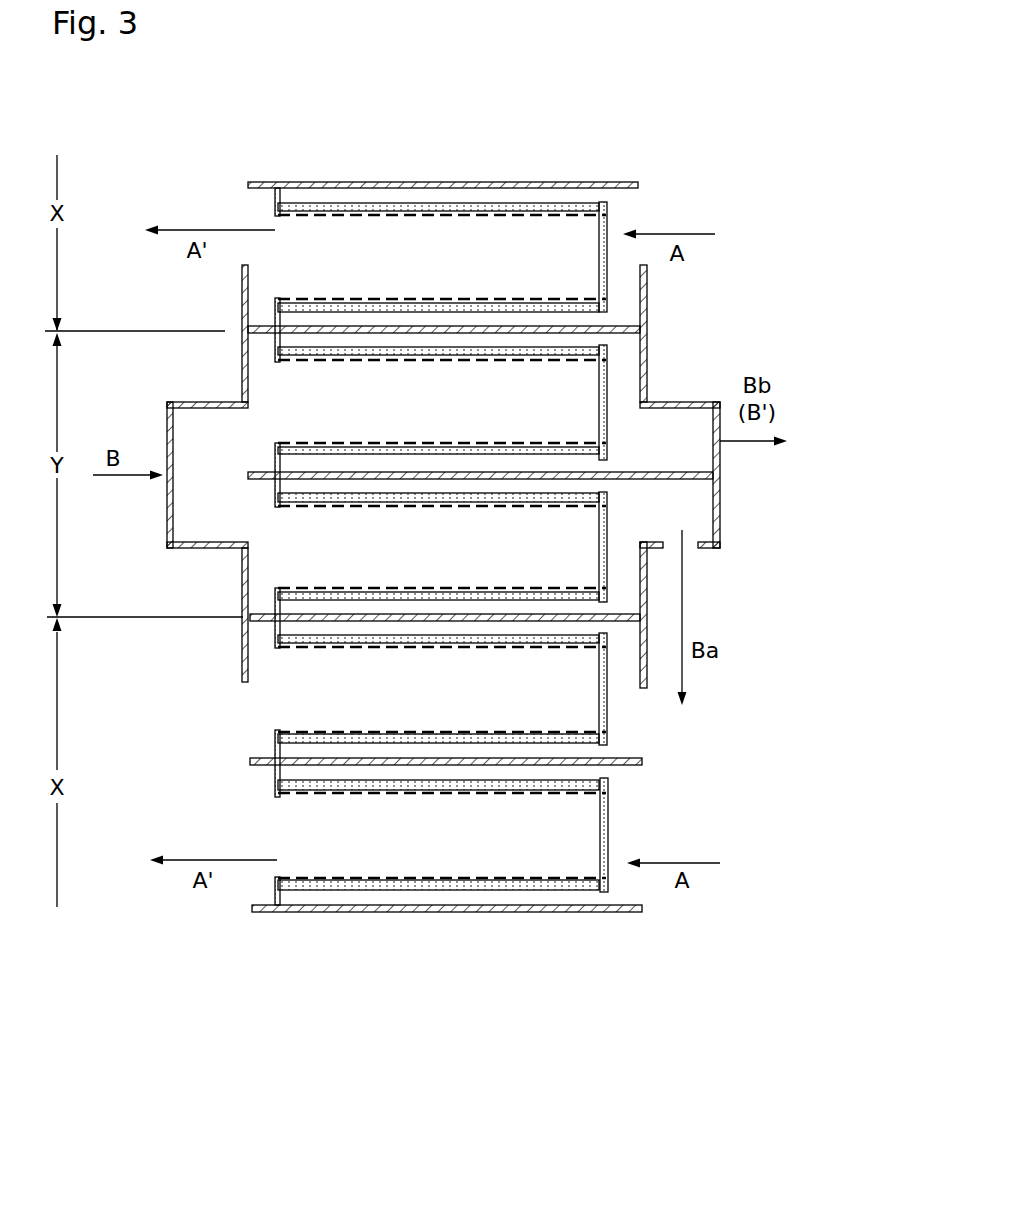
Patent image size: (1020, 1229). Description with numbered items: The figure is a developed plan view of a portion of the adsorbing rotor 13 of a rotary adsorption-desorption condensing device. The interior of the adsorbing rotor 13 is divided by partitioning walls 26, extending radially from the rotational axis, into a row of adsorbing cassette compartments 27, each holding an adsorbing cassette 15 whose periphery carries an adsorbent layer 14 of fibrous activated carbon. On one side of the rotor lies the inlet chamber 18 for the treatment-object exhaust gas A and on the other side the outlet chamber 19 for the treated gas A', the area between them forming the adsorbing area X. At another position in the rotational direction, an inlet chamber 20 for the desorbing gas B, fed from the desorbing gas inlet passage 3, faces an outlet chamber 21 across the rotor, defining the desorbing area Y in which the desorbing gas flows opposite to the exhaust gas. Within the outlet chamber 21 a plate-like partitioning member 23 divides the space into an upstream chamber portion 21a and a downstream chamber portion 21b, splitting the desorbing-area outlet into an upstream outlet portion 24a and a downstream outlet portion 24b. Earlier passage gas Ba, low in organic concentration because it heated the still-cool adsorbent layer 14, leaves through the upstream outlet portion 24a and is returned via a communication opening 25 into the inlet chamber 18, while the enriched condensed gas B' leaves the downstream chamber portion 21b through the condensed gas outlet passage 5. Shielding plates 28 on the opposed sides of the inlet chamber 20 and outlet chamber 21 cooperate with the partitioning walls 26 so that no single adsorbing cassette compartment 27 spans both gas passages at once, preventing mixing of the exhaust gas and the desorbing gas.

The desorbing gas inlet passage 3 is at (110, 478).
The condensed gas outlet passage 5 is at (735, 440).
The adsorbing rotor 13 is at (538, 950).
The adsorbent layer 14 is at (500, 213).
The adsorbing cassette 15 is at (620, 223).
The inlet chamber 18 is at (698, 780).
The outlet chamber 19 is at (107, 778).
The inlet chamber for desorbing gas 20 is at (205, 402).
The outlet chamber for desorbing gas 21 is at (717, 548).
The upstream chamber portion 21a is at (680, 510).
The downstream chamber portion 21b is at (680, 437).
The partitioning member 23 is at (688, 479).
The upstream outlet portion 24a is at (628, 518).
The downstream outlet portion 24b is at (632, 435).
The communication opening 25 is at (694, 556).
The partitioning wall 26 is at (485, 182).
The adsorbing cassette compartment 27 is at (443, 308).
The shielding plate 28 is at (242, 325).